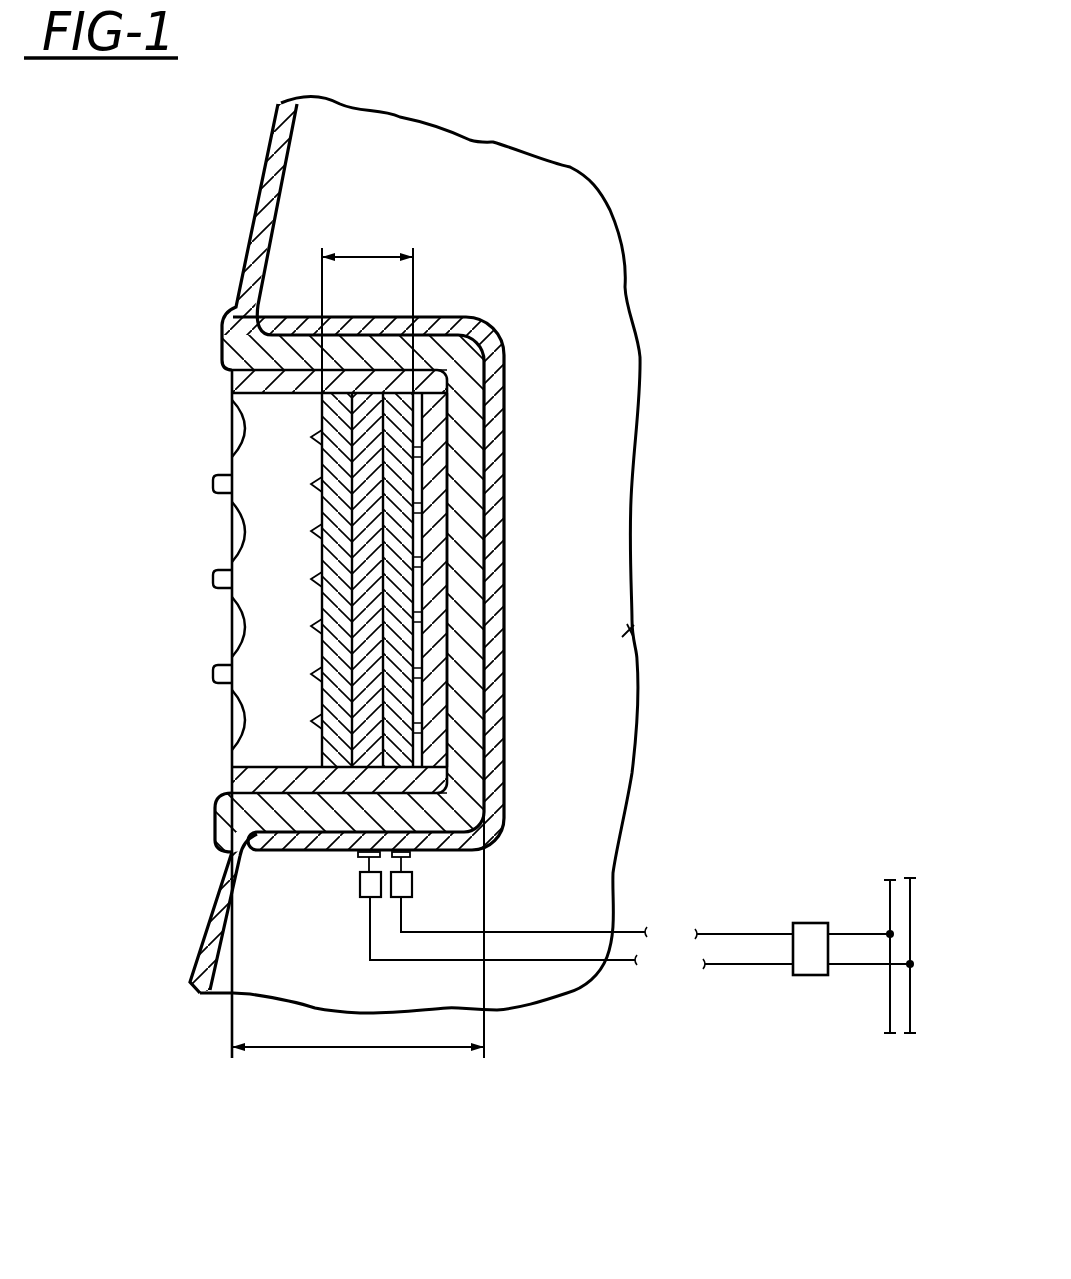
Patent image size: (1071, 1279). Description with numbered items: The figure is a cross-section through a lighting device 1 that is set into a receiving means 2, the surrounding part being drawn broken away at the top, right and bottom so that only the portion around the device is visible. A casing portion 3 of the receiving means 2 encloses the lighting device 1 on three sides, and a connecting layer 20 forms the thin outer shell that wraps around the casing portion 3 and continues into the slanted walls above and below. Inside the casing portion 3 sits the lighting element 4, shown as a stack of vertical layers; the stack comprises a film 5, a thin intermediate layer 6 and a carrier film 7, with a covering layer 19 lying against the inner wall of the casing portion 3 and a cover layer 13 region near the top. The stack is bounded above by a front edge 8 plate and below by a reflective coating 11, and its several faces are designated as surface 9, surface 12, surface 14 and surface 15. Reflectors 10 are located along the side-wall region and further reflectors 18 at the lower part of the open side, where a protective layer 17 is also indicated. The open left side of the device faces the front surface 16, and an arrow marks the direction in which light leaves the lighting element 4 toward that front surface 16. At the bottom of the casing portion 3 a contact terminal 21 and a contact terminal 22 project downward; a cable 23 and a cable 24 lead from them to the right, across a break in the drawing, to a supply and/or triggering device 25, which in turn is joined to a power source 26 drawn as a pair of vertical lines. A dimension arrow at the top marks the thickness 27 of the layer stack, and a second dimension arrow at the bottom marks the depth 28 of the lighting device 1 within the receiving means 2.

The lighting device 1 is at (195, 298).
The receiving means 2 is at (517, 335).
The casing portion 3 is at (630, 630).
The lighting element 4 is at (467, 433).
The film 5 is at (377, 370).
The intermediate layer 6 is at (410, 466).
The carrier film 7 is at (436, 498).
The front edge 8 is at (282, 386).
The surface 9 is at (378, 637).
The reflectors 10 is at (455, 563).
The reflective coating 11 is at (396, 736).
The surface 12 is at (325, 588).
The surface 13 is at (320, 413).
The surface 14 is at (355, 692).
The surface 15 is at (320, 462).
The front surface 16 is at (287, 522).
The protective layer 17 is at (258, 662).
The reflectors 18 is at (238, 720).
The covering layer 19 is at (445, 722).
The connecting layer 20 is at (505, 605).
The contact terminal 21 is at (338, 838).
The contact terminal 22 is at (345, 858).
The cable 23 is at (404, 915).
The cable 24 is at (369, 917).
The supply and/or triggering device 25 is at (800, 986).
The power source 26 is at (873, 907).
The thickness 27 is at (363, 256).
The depth 28 is at (365, 1050).